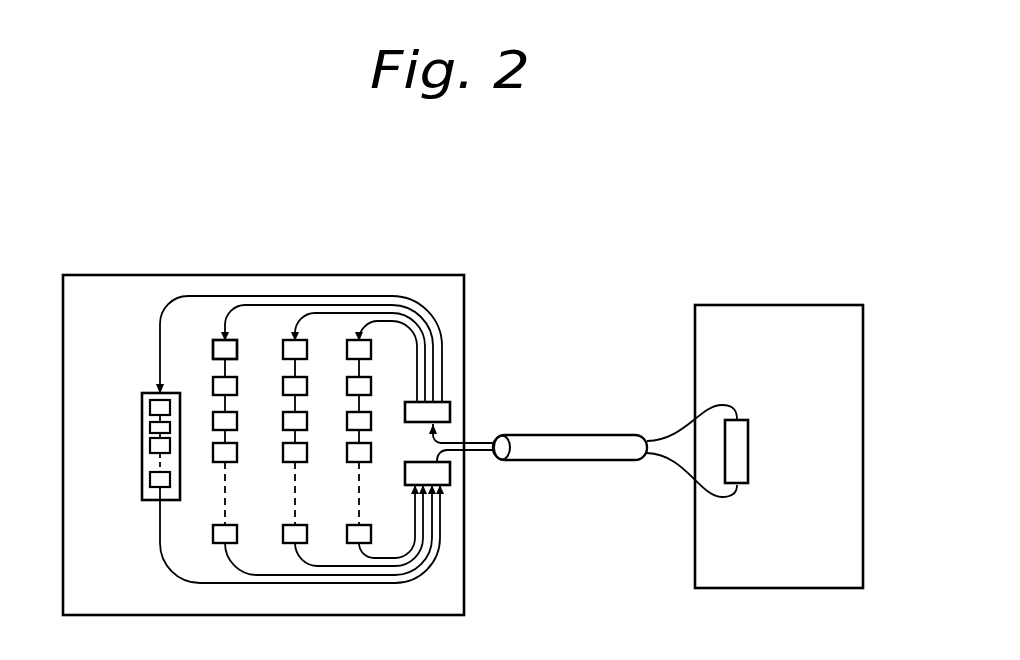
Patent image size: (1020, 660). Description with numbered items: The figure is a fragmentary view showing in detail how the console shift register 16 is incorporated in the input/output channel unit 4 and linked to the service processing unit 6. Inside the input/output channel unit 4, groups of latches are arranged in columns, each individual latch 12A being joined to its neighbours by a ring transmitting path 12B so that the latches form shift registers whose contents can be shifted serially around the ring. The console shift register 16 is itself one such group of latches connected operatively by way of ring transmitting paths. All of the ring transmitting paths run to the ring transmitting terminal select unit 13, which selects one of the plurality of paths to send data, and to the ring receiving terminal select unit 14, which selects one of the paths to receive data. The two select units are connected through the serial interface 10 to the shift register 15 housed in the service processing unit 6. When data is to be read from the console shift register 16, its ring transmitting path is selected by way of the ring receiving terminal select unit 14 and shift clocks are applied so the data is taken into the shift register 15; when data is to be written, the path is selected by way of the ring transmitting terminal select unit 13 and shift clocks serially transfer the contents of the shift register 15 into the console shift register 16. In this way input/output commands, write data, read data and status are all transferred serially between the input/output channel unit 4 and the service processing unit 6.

The input/output channel unit 4 is at (345, 275).
The service processing unit 6 is at (788, 303).
The serial interface 10 is at (581, 432).
The latch 12A is at (213, 350).
The ring transmitting path 12B is at (161, 323).
The ring transmitting terminal select unit 13 is at (450, 408).
The ring receiving terminal select unit 14 is at (450, 473).
The shift register 15 is at (748, 456).
The console shift register 16 is at (142, 410).